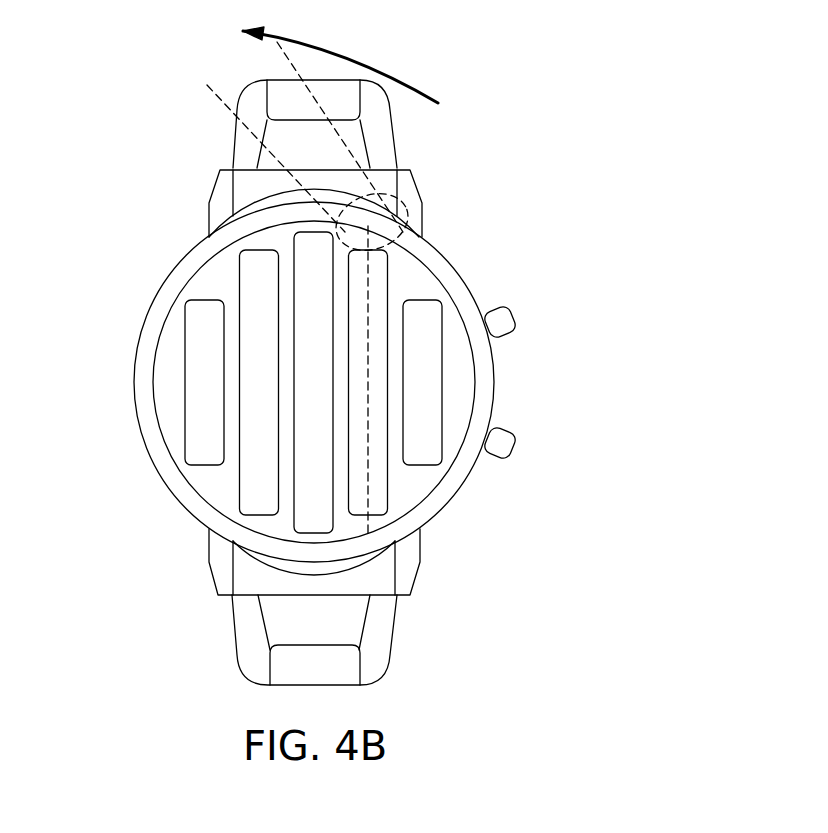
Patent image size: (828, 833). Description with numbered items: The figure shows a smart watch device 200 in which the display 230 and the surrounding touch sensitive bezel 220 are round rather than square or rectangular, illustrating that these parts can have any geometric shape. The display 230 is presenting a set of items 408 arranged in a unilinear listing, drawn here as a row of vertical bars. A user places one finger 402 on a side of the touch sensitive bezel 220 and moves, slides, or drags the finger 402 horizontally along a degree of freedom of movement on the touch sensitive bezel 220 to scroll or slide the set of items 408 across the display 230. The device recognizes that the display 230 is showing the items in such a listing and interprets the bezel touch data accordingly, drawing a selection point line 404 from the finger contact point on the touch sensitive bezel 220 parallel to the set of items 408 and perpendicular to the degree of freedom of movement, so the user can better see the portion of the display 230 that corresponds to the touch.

The smart watch device 200 is at (474, 559).
The touch sensitive bezel 220 is at (163, 480).
The display 230 is at (462, 378).
The finger 402 is at (222, 102).
The selection point line 404 is at (368, 437).
The set of items 408 is at (185, 372).